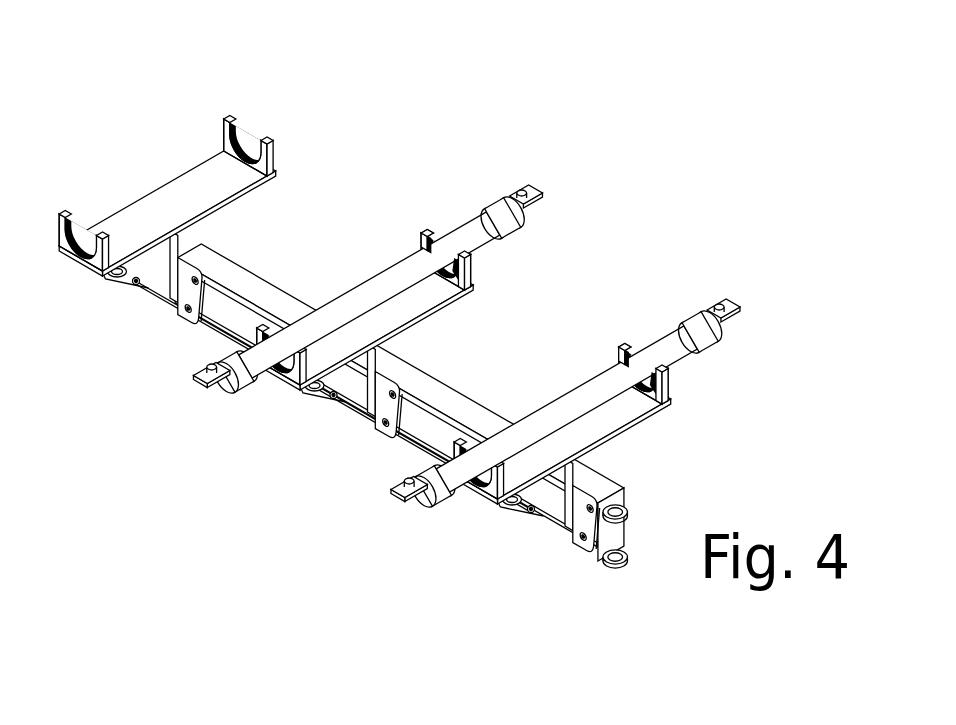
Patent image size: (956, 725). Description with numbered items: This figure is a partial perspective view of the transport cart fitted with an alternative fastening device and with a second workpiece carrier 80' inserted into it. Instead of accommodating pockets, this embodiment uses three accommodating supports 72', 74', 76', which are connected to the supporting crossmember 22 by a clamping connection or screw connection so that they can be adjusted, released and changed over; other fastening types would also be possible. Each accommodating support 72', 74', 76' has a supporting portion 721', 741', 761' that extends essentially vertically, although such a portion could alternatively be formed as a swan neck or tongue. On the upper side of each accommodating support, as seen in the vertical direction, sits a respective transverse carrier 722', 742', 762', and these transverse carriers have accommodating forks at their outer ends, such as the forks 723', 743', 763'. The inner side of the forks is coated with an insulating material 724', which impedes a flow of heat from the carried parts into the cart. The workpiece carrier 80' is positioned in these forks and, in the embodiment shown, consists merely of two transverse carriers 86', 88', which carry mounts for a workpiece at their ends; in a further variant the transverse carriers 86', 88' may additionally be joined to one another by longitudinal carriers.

The supporting crossmember 22 is at (456, 386).
The accommodating support 72' is at (141, 291).
The accommodating support 74' is at (337, 409).
The accommodating support 76' is at (561, 519).
The supporting portion 721' is at (84, 306).
The supporting portion 741' is at (275, 416).
The supporting portion 761' is at (495, 537).
The transverse carrier 722' is at (166, 209).
The accommodating fork 723' is at (237, 117).
The insulating material 724' is at (287, 117).
The transverse carrier 742' is at (398, 308).
The accommodating fork 743' is at (435, 205).
The transverse carrier 762' is at (588, 422).
The accommodating fork 763' is at (641, 320).
The workpiece carrier 80' is at (487, 246).
The transverse carrier 86' is at (516, 181).
The transverse carrier 88' is at (738, 285).